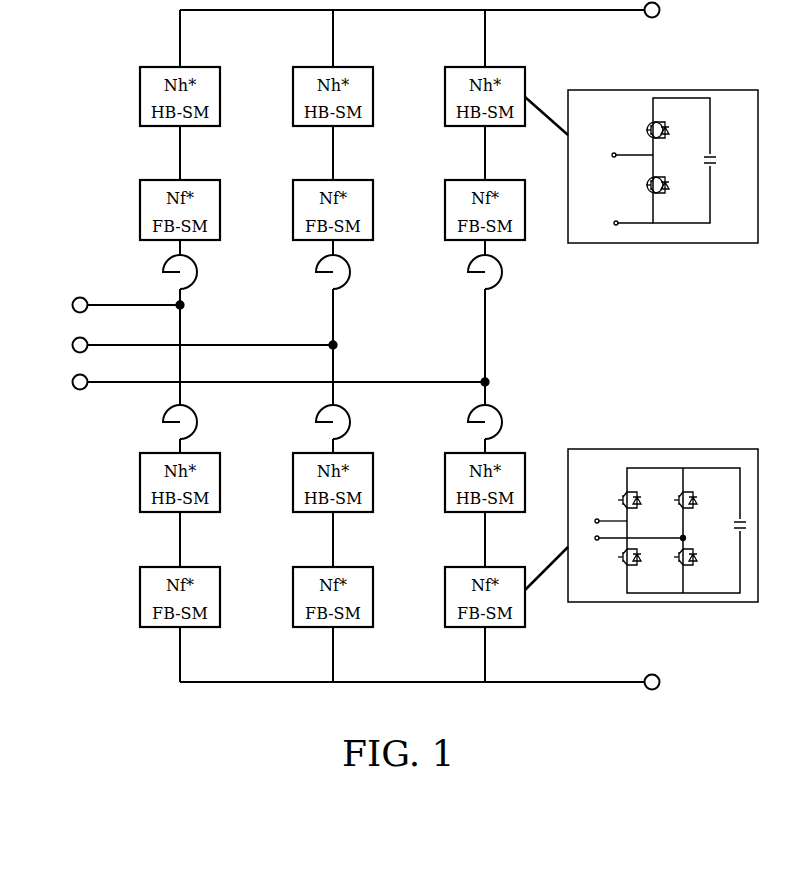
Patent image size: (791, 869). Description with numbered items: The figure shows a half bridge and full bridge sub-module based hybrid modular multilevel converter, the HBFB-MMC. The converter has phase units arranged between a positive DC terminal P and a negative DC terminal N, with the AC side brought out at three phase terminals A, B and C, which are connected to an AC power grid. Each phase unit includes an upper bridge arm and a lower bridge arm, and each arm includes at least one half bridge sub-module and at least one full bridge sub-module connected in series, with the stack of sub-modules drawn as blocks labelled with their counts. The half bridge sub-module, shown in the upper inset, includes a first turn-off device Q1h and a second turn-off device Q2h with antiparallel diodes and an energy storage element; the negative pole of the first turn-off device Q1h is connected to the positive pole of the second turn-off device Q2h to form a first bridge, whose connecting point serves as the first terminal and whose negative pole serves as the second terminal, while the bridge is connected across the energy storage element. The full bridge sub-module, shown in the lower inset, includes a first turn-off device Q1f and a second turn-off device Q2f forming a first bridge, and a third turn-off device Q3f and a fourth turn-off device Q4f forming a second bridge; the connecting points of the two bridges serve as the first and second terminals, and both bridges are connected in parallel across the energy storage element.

The positive DC terminal P is at (649, 30).
The negative DC terminal N is at (638, 666).
The AC phase A terminal A is at (106, 304).
The AC phase B terminal B is at (184, 346).
The AC phase C terminal C is at (260, 383).
The first turn-off device Q1h is at (644, 124).
The second turn-off device Q2h is at (644, 198).
The first turn-off device Q1f is at (618, 493).
The second turn-off device Q2f is at (618, 565).
The third turn-off device Q3f is at (675, 493).
The fourth turn-off device Q4f is at (675, 565).